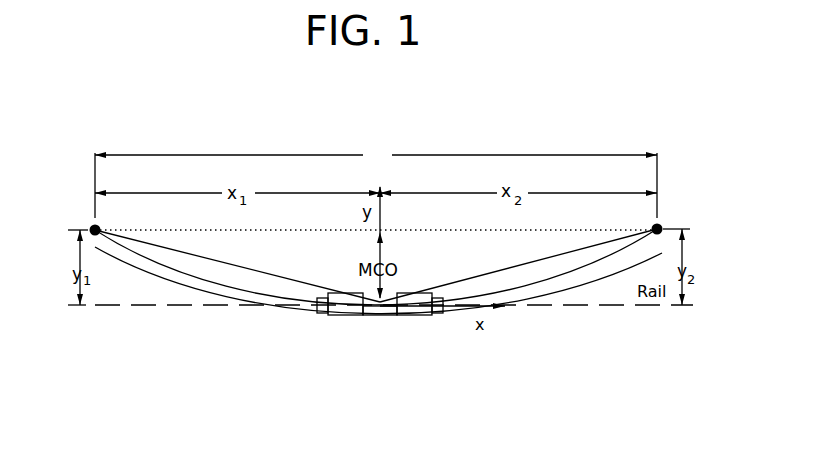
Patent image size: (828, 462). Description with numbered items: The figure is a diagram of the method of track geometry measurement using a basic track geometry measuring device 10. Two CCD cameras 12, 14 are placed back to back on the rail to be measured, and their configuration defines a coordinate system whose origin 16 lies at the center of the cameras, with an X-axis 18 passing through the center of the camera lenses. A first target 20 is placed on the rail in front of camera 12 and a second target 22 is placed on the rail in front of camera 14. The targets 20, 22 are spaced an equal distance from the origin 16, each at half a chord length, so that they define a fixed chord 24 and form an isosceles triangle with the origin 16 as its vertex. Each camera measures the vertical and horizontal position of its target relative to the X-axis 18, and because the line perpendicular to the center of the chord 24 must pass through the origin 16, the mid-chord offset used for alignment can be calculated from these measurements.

The track geometry measuring device 10 is at (598, 346).
The CCD camera 12 is at (347, 311).
The CCD camera 14 is at (422, 311).
The origin 16 is at (384, 299).
The X-axis 18 is at (540, 306).
The first target 20 is at (92, 229).
The second target 22 is at (660, 226).
The fixed chord 24 is at (450, 155).